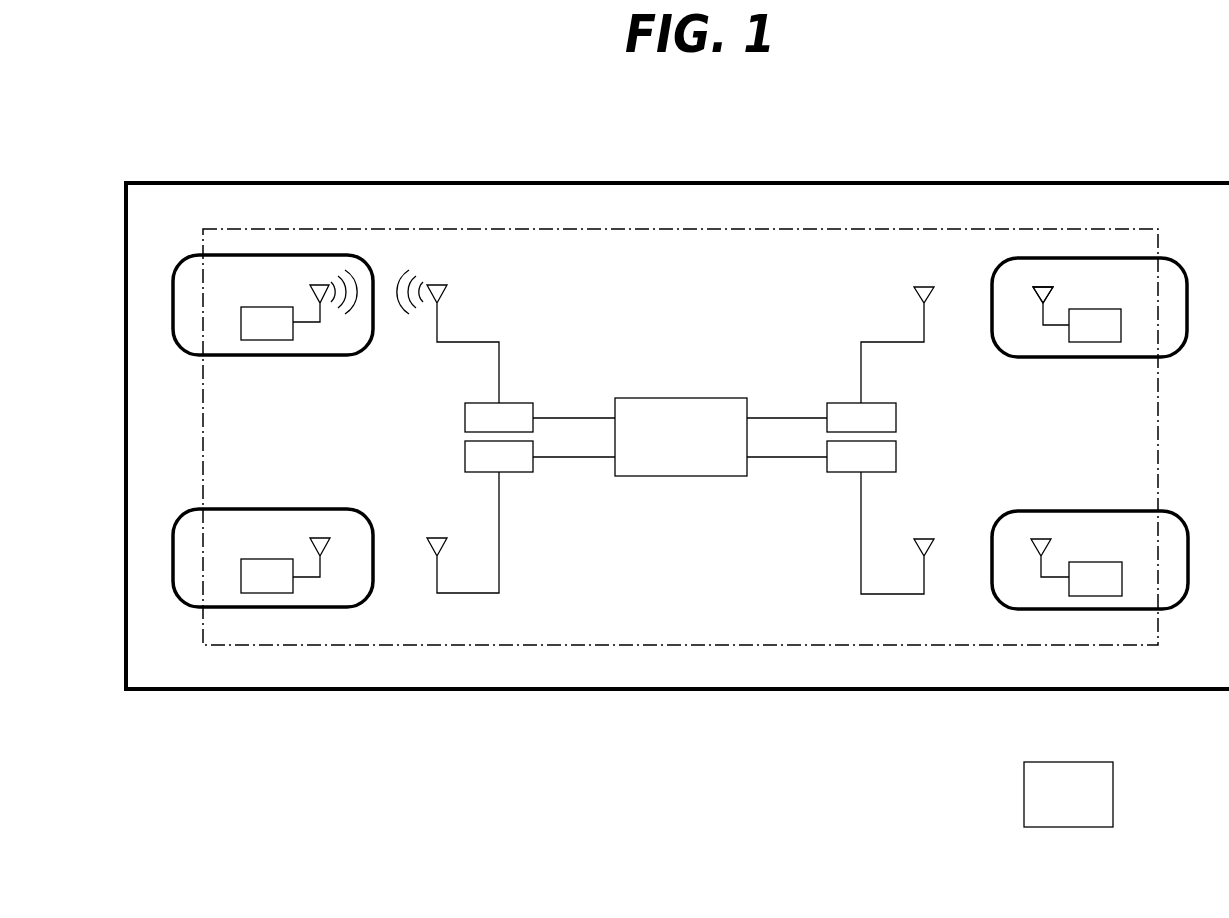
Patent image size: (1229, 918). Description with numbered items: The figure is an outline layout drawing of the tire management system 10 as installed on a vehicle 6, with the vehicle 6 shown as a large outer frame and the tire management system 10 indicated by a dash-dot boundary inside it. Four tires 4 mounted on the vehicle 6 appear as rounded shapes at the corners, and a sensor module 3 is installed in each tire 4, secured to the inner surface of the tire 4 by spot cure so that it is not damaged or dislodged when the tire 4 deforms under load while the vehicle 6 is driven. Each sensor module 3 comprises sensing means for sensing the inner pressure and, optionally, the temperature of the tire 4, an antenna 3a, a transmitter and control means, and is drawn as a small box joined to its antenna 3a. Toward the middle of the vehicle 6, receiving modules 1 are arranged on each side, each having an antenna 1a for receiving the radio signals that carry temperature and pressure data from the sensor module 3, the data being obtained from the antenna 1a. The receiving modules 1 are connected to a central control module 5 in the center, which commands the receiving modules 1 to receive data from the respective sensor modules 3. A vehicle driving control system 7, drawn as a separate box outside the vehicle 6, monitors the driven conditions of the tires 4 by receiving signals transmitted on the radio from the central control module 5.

The receiving module 1 is at (528, 403).
The antenna 1a is at (932, 285).
The sensor module 3 is at (270, 340).
The antenna 3a is at (1043, 287).
The tire 4 is at (243, 255).
The central control module 5 is at (680, 398).
The vehicle 6 is at (940, 183).
The vehicle driving control system 7 is at (1024, 787).
The tire management system 10 is at (680, 228).